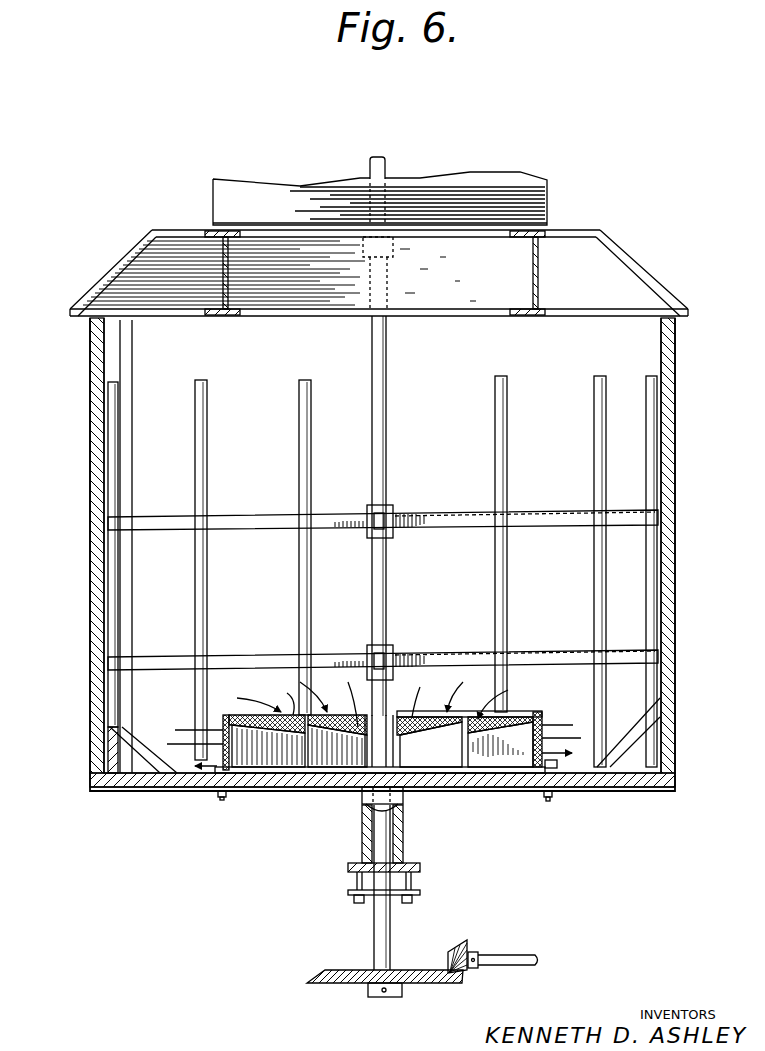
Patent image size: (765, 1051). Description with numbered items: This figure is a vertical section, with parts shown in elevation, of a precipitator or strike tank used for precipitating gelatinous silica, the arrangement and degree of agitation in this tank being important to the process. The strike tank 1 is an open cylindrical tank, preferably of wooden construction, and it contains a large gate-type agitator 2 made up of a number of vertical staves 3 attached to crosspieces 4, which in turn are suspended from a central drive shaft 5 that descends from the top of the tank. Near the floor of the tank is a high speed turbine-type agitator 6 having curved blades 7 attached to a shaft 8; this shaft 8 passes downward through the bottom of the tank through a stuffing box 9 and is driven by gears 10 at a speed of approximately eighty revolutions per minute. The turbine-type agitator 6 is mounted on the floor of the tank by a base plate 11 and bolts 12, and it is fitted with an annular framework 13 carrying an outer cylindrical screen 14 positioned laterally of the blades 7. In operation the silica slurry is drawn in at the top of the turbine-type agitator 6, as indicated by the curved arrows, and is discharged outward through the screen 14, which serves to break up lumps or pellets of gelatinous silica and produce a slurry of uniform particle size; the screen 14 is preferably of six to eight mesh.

The strike tank 1 is at (679, 437).
The gate-type agitator 2 is at (654, 597).
The vertical staves 3 is at (113, 450).
The crosspieces 4 is at (445, 517).
The central drive shaft 5 is at (391, 379).
The turbine-type agitator 6 is at (282, 713).
The curved blades 7 is at (382, 741).
The shaft 8 is at (373, 931).
The stuffing box 9 is at (396, 809).
The gears 10 is at (346, 985).
The base plate 11 is at (273, 773).
The bolts 12 is at (222, 794).
The annular framework 13 is at (513, 712).
The outer cylindrical screen 14 is at (544, 718).